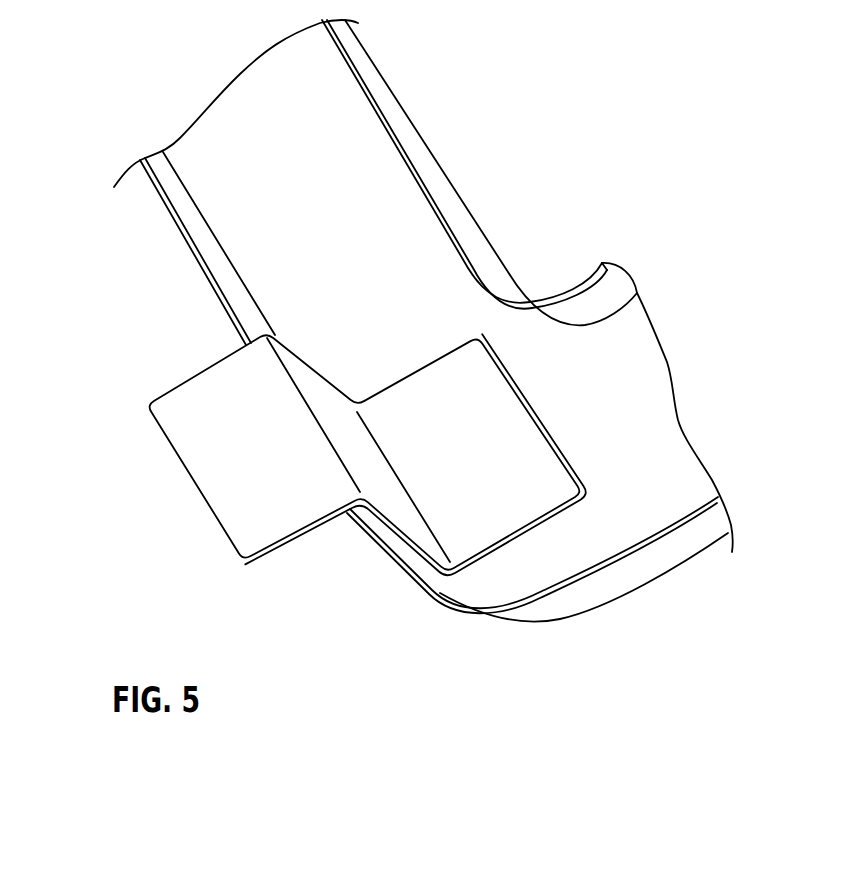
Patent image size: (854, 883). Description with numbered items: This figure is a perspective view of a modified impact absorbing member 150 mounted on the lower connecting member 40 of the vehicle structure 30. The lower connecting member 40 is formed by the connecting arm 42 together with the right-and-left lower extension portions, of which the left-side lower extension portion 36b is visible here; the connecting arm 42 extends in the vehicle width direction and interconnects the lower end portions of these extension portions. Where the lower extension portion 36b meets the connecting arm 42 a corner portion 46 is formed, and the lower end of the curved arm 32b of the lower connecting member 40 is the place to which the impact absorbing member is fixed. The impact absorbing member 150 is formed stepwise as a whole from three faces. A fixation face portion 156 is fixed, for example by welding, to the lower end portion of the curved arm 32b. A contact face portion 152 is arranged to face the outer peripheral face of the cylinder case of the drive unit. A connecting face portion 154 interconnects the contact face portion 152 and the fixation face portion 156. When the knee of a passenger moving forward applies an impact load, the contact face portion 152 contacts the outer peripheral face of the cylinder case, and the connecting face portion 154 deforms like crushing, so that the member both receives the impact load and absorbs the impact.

The channel member 30 is at (423, 400).
The lower connecting member 40 is at (464, 151).
The connecting arm 42 is at (275, 203).
The lower extension portion 36b is at (652, 382).
The curved arm 32b is at (713, 552).
The corner portion 46 is at (525, 567).
The impact absorbing member 150 is at (316, 442).
The contact face portion 152 is at (232, 475).
The connecting face portion 154 is at (328, 408).
The fixation face portion 156 is at (500, 412).